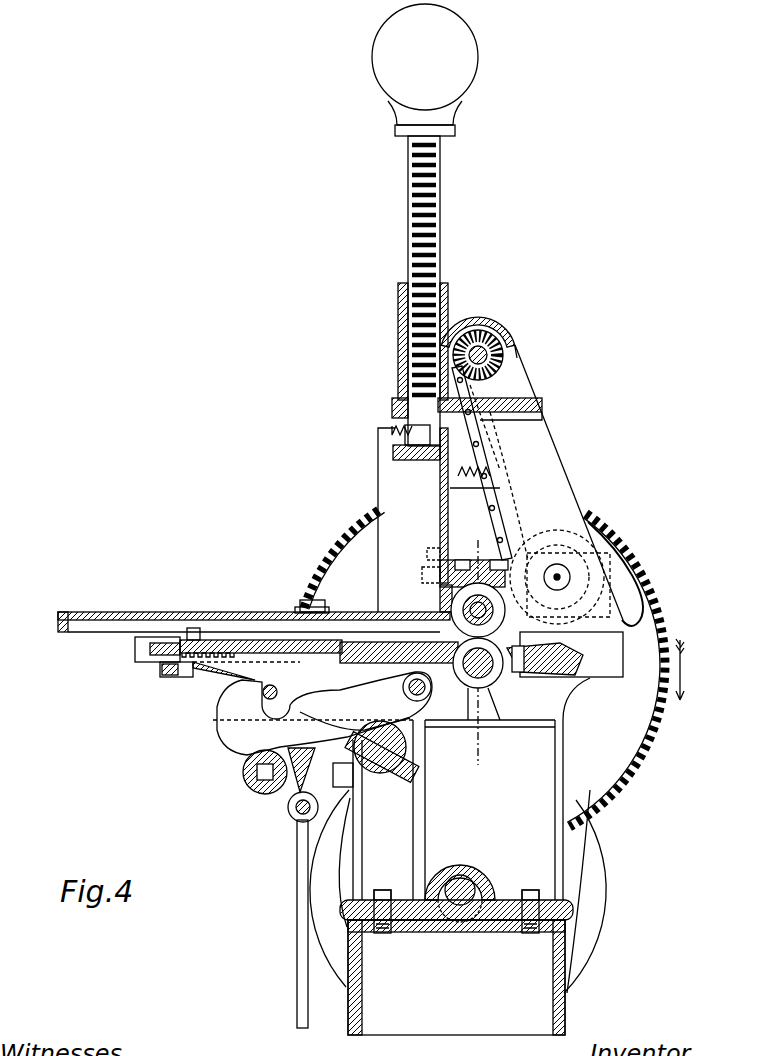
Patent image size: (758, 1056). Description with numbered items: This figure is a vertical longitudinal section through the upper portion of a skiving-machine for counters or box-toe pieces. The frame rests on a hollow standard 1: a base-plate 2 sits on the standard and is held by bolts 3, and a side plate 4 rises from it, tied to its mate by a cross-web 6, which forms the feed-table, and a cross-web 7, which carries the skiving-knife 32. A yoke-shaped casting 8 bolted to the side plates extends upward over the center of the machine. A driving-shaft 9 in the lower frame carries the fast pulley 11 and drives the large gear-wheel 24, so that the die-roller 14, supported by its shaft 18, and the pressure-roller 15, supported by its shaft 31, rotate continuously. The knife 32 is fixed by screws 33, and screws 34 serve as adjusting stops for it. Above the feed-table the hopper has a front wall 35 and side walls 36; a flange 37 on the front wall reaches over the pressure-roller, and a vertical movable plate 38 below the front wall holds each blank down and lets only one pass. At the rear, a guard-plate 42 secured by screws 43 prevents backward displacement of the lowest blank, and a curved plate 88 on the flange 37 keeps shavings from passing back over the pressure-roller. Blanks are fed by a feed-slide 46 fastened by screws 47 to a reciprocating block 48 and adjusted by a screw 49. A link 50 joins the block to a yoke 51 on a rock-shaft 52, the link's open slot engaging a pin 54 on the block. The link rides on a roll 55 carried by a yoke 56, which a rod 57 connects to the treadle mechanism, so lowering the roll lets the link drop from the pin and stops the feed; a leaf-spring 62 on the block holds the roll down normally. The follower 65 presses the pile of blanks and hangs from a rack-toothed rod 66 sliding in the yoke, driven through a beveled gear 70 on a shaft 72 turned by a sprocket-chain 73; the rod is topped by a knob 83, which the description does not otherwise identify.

The hollow case or standard 1 is at (370, 1012).
The base-plate 2 is at (410, 916).
The bolts 3 is at (383, 892).
The side plate 4 is at (471, 789).
The cross-web 6 is at (380, 663).
The cross-web 7 is at (494, 653).
The yoke-shaped casting 8 is at (556, 470).
The driving-shaft 9 is at (462, 885).
The fast driving-pulley 11 is at (600, 905).
The die-roller 14 is at (470, 686).
The pressure-roller 15 is at (449, 608).
The shaft 18 is at (488, 690).
The large gear-wheel 24 is at (640, 596).
The shaft 31 is at (462, 615).
The skiving-knife 32 is at (560, 622).
The screws 33 is at (571, 654).
The screws 34 is at (530, 678).
The front wall 35 is at (440, 519).
The side walls 36 is at (378, 452).
The flange 37 is at (440, 572).
The vertical movable plate 38 is at (440, 600).
The guard-plate 42 is at (130, 612).
The screws 43 is at (322, 604).
The feed-slide 46 is at (243, 639).
The screws 47 is at (197, 629).
The block 48 is at (186, 670).
The screw 49 is at (158, 658).
The link 50 is at (240, 742).
The yoke 51 is at (407, 740).
The rock-shaft 52 is at (385, 782).
The pin 54 is at (278, 692).
The roll 55 is at (262, 790).
The yoke 56 is at (298, 812).
The rod 57 is at (297, 906).
The leaf-spring 62 is at (205, 722).
The follower 65 is at (418, 460).
The rod 66 is at (432, 240).
The beveled gear 70 is at (500, 355).
The shaft 72 is at (495, 345).
The sprocket-chain 73 is at (489, 463).
The knob 83 is at (470, 78).
The curved plate 88 is at (532, 566).